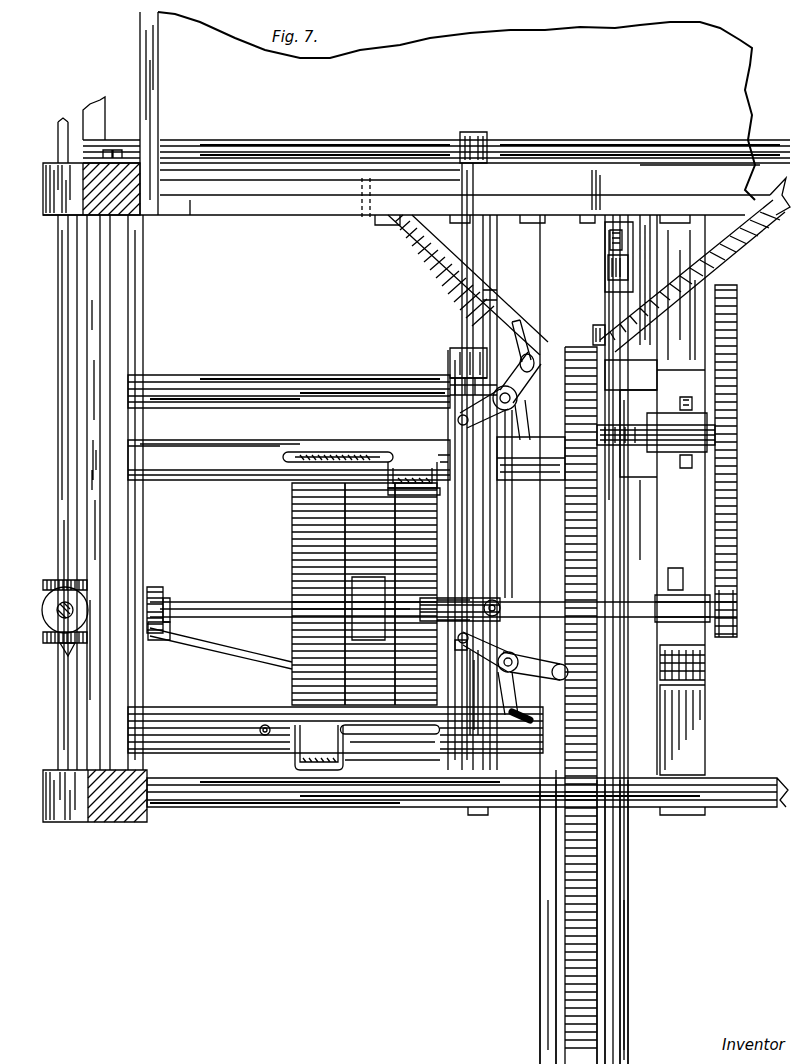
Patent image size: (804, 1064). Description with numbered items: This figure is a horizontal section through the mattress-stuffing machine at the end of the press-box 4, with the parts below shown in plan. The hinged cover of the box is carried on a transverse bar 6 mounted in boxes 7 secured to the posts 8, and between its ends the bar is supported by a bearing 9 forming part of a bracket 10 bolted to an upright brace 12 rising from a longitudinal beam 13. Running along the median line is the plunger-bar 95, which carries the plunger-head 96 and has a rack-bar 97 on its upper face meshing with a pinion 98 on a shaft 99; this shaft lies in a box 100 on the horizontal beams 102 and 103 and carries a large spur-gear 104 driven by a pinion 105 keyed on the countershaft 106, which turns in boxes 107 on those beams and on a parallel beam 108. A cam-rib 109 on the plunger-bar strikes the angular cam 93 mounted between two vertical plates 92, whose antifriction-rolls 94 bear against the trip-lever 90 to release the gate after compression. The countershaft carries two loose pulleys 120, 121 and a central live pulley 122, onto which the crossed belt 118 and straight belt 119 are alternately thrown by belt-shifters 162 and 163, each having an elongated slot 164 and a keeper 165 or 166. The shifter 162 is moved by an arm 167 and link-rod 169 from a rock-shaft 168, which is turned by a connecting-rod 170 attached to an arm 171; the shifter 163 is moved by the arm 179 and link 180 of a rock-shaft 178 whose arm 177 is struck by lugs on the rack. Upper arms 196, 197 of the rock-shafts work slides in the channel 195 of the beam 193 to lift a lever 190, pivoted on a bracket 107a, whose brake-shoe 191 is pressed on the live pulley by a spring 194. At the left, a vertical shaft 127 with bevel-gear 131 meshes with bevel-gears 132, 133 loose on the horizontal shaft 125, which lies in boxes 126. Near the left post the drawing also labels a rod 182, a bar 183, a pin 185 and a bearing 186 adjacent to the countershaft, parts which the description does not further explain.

The press-box 4 is at (140, 50).
The transverse bar 6 is at (416, 169).
The boxes 7 is at (100, 100).
The posts 8 is at (118, 217).
The bearing 9 is at (471, 140).
The bracket 10 is at (475, 200).
The upright brace 12 is at (450, 356).
The longitudinal beam 13 is at (458, 348).
The trip-lever 90 is at (610, 318).
The vertical plates 92 is at (635, 250).
The angular cam 93 is at (625, 240).
The antifriction-rolls 94 is at (620, 224).
The plunger-bar 95 is at (605, 932).
The plunger-head 96 is at (675, 179).
The rack-bar 97 is at (598, 856).
The pinion 98 is at (545, 480).
The shaft 99 is at (656, 435).
The box 100 is at (677, 432).
The horizontal beam 102 is at (662, 495).
The horizontal beam 103 is at (500, 250).
The spur-gear 104 is at (737, 410).
The pinion 105 is at (745, 617).
The shaft 106 is at (645, 620).
The boxes 107 is at (166, 600).
The bracket 107a is at (172, 606).
The beam 108 is at (148, 505).
The cam-rib 109 is at (605, 745).
The crossed belt 118 is at (418, 496).
The straight belt 119 is at (316, 454).
The loose pulley 120 is at (413, 594).
The loose pulley 121 is at (364, 594).
The live pulley 122 is at (363, 594).
The horizontal shaft 125 is at (60, 510).
The boxes 126 is at (48, 222).
The vertical shaft 127 is at (48, 612).
The bevel-gear 131 is at (58, 635).
The bevel-gear 132 is at (50, 585).
The bevel-gear 133 is at (62, 648).
The belt-shifter 162 is at (289, 460).
The belt-shifter 163 is at (335, 730).
The elongated slot 164 is at (366, 456).
The loop or keeper 165 is at (440, 470).
The loop or keeper 166 is at (290, 765).
The arm 167 is at (533, 458).
The rock-shaft 168 is at (450, 385).
The link-rod 169 is at (452, 455).
The connecting-rod 170 is at (525, 345).
The arm 171 is at (545, 355).
The arm 177 is at (514, 675).
The rock-shaft 178 is at (510, 658).
The arm 179 is at (495, 700).
The link 180 is at (350, 766).
The rod 182 is at (250, 652).
The bar 183 is at (420, 722).
The pin 185 is at (520, 724).
The bearing 186 is at (195, 640).
The lever 190 is at (316, 600).
The brake-shoe 191 is at (378, 590).
The beam 193 is at (498, 600).
The pressure-spring 194 is at (470, 560).
The channel 195 is at (490, 560).
The arm 196 is at (518, 400).
The arm 197 is at (455, 645).